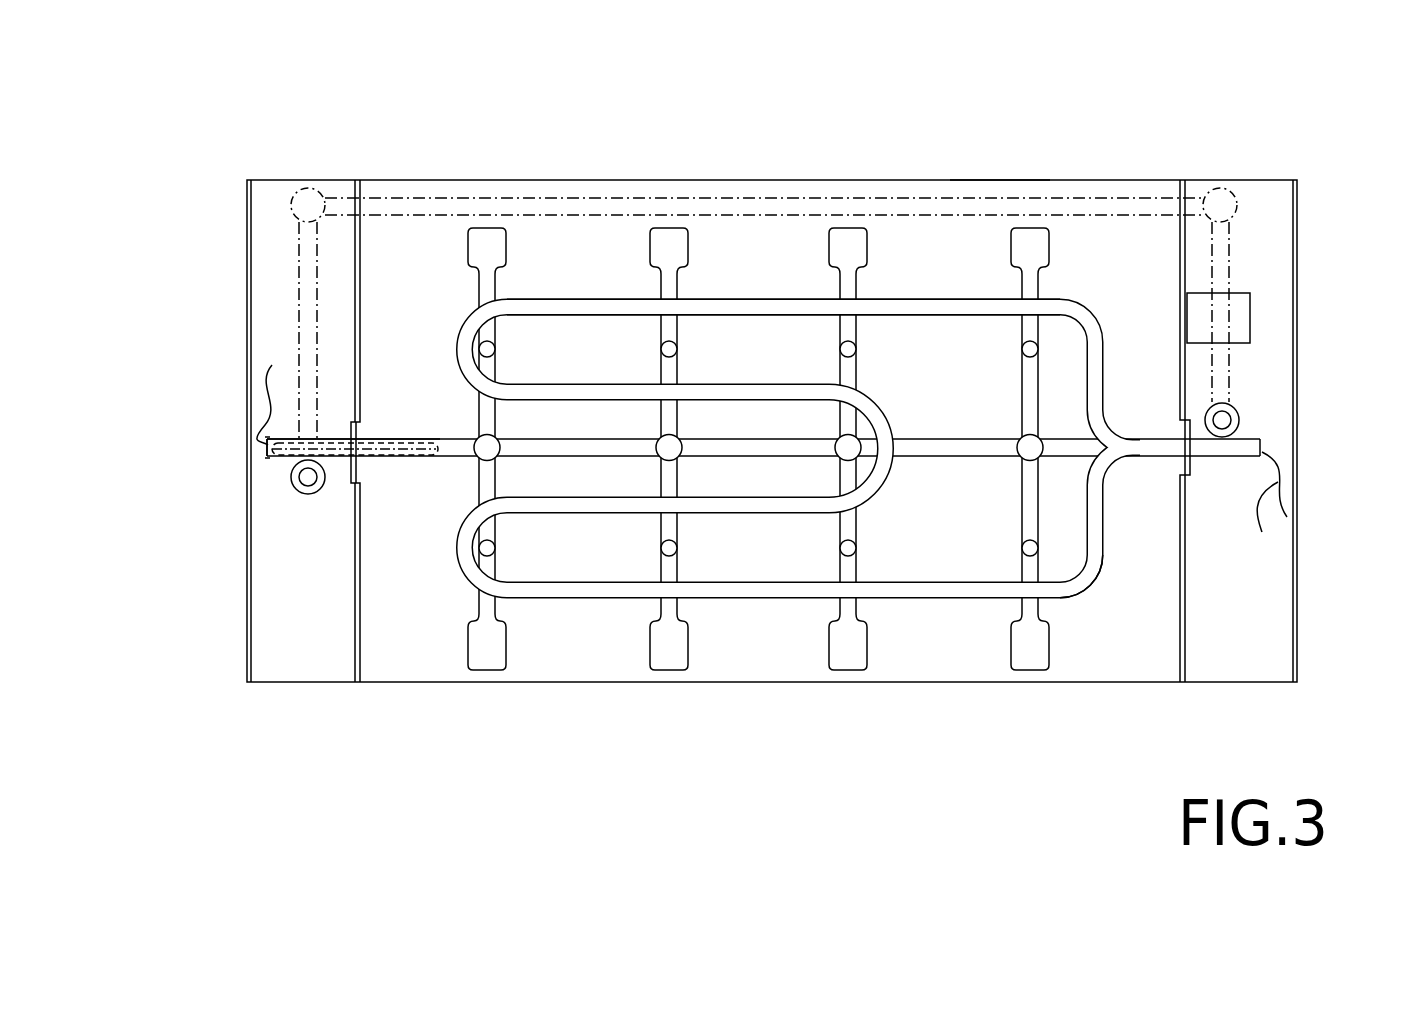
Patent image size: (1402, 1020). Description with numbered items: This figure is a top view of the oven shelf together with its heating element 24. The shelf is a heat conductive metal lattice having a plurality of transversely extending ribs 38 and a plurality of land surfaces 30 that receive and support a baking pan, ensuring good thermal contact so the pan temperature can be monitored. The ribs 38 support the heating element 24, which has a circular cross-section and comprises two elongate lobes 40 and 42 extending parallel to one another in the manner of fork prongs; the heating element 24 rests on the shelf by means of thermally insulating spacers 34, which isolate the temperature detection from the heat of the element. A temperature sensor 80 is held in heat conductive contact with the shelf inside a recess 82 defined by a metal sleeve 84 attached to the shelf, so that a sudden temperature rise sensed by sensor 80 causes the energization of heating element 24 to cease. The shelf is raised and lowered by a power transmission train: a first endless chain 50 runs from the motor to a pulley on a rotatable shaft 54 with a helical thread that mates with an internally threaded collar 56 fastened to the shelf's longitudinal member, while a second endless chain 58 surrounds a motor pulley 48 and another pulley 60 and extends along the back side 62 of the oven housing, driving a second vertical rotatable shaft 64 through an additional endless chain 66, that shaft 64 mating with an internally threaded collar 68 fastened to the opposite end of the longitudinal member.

The heating element 24 is at (715, 622).
The land surfaces 30 is at (660, 458).
The thermally insulating spacers 34 is at (1038, 285).
The transversely extending ribs 38 is at (855, 525).
The elongate lobe 40 is at (1082, 592).
The elongate lobe 42 is at (790, 298).
The pulley 48 is at (1235, 195).
The first endless chain 50 is at (1232, 255).
The rotatable shaft 54 is at (1227, 419).
The internally threaded collar 56 is at (1235, 426).
The second endless chain 58 is at (520, 195).
The pulley 60 is at (293, 200).
The back side of oven housing 62 is at (990, 182).
The rotatable shaft 64 is at (303, 482).
The additional endless chain 66 is at (300, 330).
The internally threaded collar 68 is at (293, 483).
The temperature sensor 80 is at (372, 445).
The recess 82 is at (390, 442).
The metal sleeve 84 is at (266, 452).